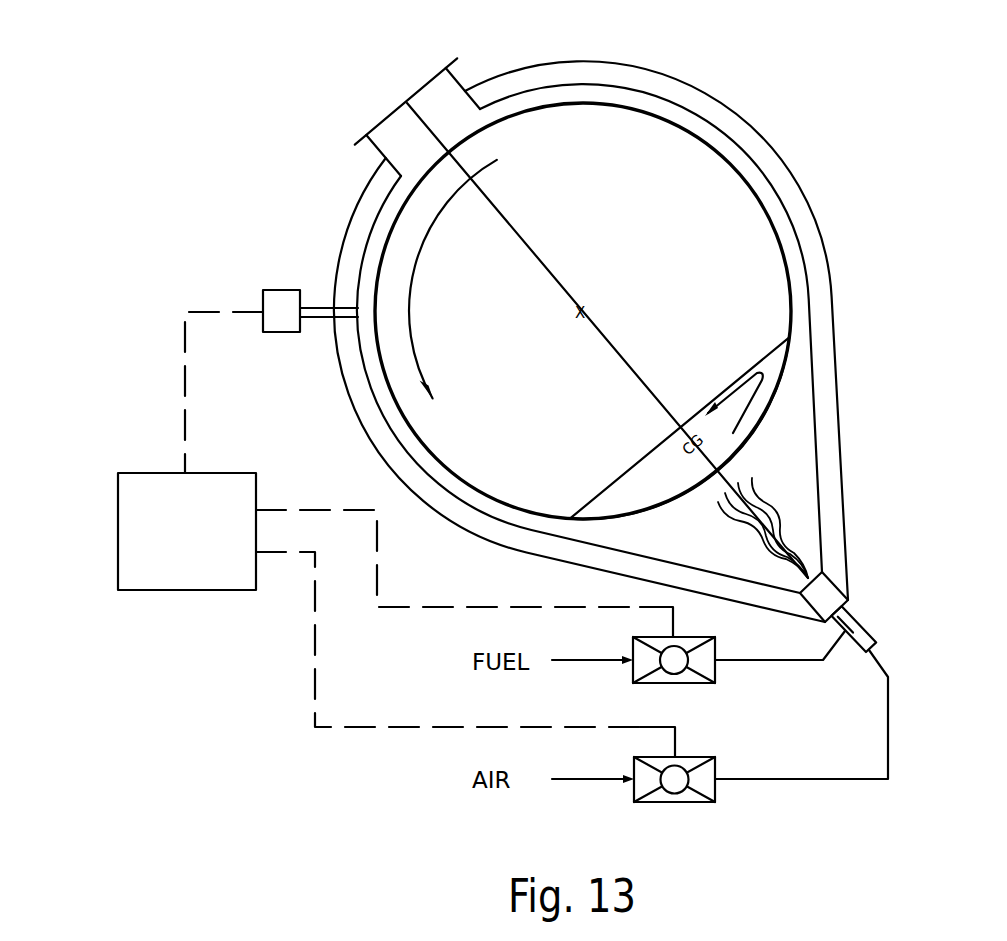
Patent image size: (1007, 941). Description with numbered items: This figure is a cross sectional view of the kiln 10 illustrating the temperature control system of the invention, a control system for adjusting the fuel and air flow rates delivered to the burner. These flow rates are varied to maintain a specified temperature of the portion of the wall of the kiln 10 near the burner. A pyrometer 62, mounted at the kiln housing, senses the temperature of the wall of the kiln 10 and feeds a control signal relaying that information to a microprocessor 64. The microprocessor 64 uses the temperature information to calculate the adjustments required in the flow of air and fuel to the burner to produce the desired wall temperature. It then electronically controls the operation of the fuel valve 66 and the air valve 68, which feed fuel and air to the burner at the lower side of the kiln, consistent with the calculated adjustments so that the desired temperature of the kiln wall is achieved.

The kiln 10 is at (427, 447).
The pyrometer 62 is at (282, 290).
The microprocessor 64 is at (167, 473).
The fuel valve 66 is at (677, 683).
The air valve 68 is at (687, 802).